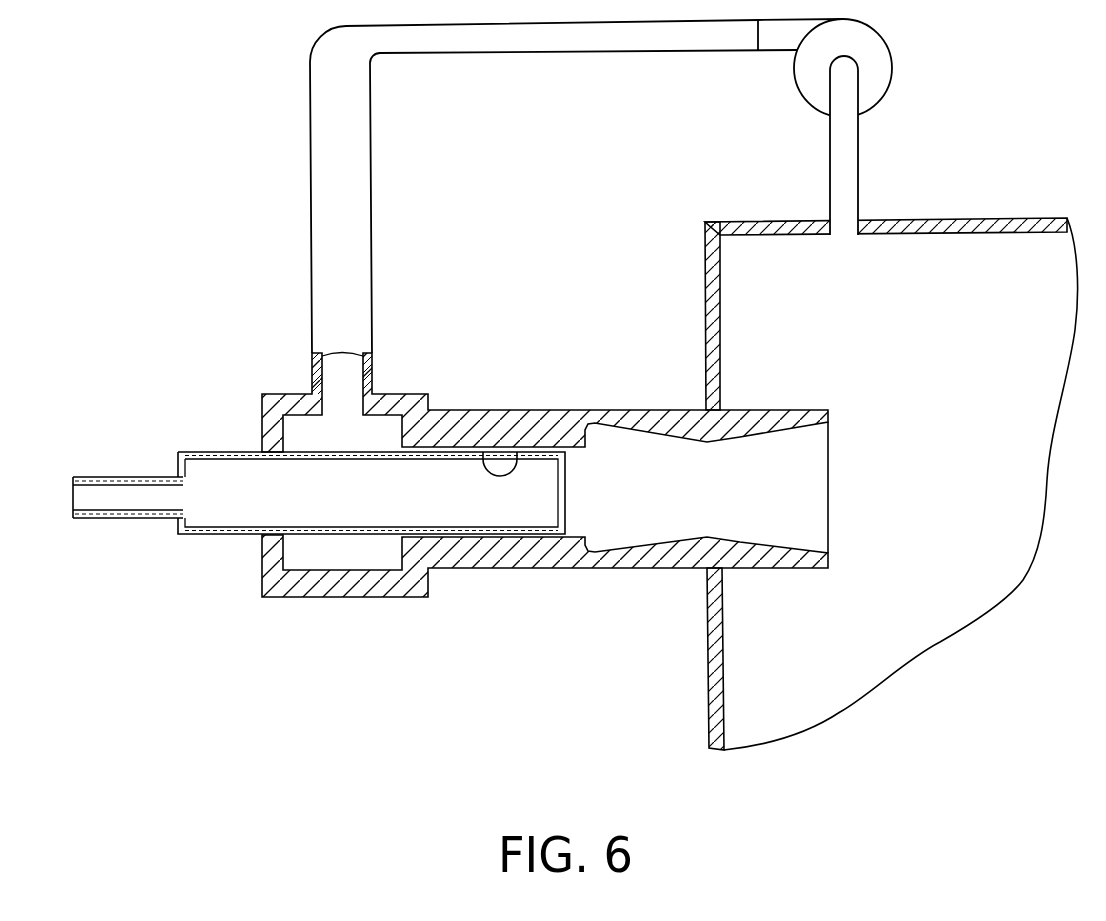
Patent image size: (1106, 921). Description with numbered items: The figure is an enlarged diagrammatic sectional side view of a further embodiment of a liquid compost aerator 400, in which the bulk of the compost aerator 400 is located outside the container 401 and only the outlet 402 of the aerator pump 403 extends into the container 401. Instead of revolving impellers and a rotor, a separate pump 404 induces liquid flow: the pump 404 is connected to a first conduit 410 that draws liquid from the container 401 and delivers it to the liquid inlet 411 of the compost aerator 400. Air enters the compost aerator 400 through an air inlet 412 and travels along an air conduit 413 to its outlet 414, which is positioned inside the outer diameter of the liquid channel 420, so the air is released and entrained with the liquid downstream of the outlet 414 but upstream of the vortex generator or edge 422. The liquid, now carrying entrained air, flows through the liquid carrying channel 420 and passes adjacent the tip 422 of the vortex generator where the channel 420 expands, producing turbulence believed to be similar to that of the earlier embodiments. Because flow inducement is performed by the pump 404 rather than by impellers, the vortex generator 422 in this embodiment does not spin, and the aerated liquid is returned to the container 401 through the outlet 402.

The compost aerator 400 is at (470, 362).
The container 401 is at (743, 222).
The outlet 402 is at (832, 437).
The aerator pump 403 is at (616, 404).
The pump 404 is at (893, 83).
The first conduit 410 is at (848, 170).
The liquid inlet 411 is at (375, 377).
The air inlet 412 is at (75, 482).
The air conduit 413 is at (350, 450).
The outlet of the air conduit 414 is at (566, 498).
The liquid channel 420 is at (517, 452).
The vortex generator 422 is at (588, 426).